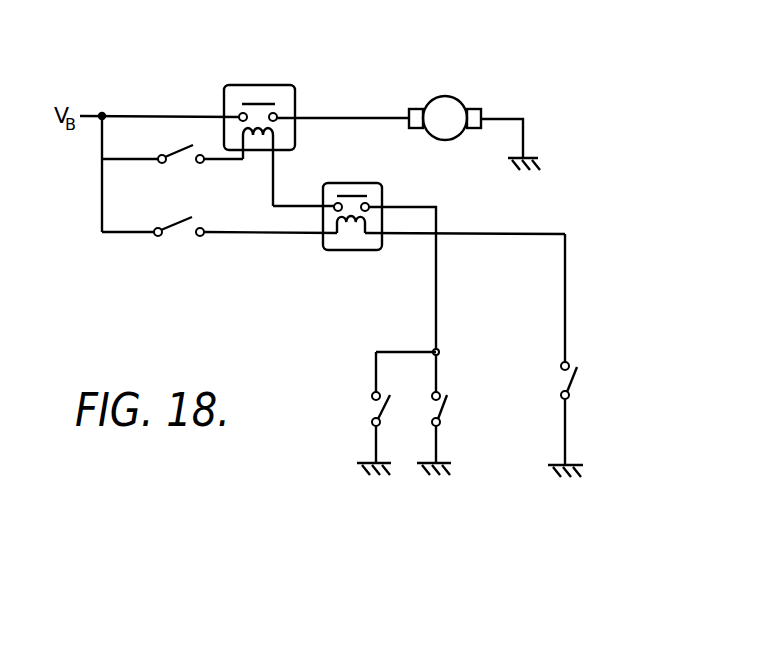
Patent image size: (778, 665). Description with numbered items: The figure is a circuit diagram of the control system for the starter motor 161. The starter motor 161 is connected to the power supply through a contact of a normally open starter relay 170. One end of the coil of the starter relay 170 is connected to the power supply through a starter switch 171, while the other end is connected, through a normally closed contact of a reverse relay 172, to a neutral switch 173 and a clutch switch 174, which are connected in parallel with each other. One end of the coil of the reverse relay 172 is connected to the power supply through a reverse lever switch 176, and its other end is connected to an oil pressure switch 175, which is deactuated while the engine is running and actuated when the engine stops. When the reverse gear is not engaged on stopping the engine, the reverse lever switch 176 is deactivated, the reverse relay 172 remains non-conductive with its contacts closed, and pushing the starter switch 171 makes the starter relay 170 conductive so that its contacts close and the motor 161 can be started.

The starter relay 170 is at (259, 84).
The starter motor 161 is at (446, 95).
The starter switch 171 is at (193, 147).
The reverse lever switch 176 is at (182, 229).
The reverse relay 172 is at (352, 252).
The neutral switch 173 is at (367, 407).
The clutch switch 174 is at (443, 406).
The oil pressure switch 175 is at (577, 380).